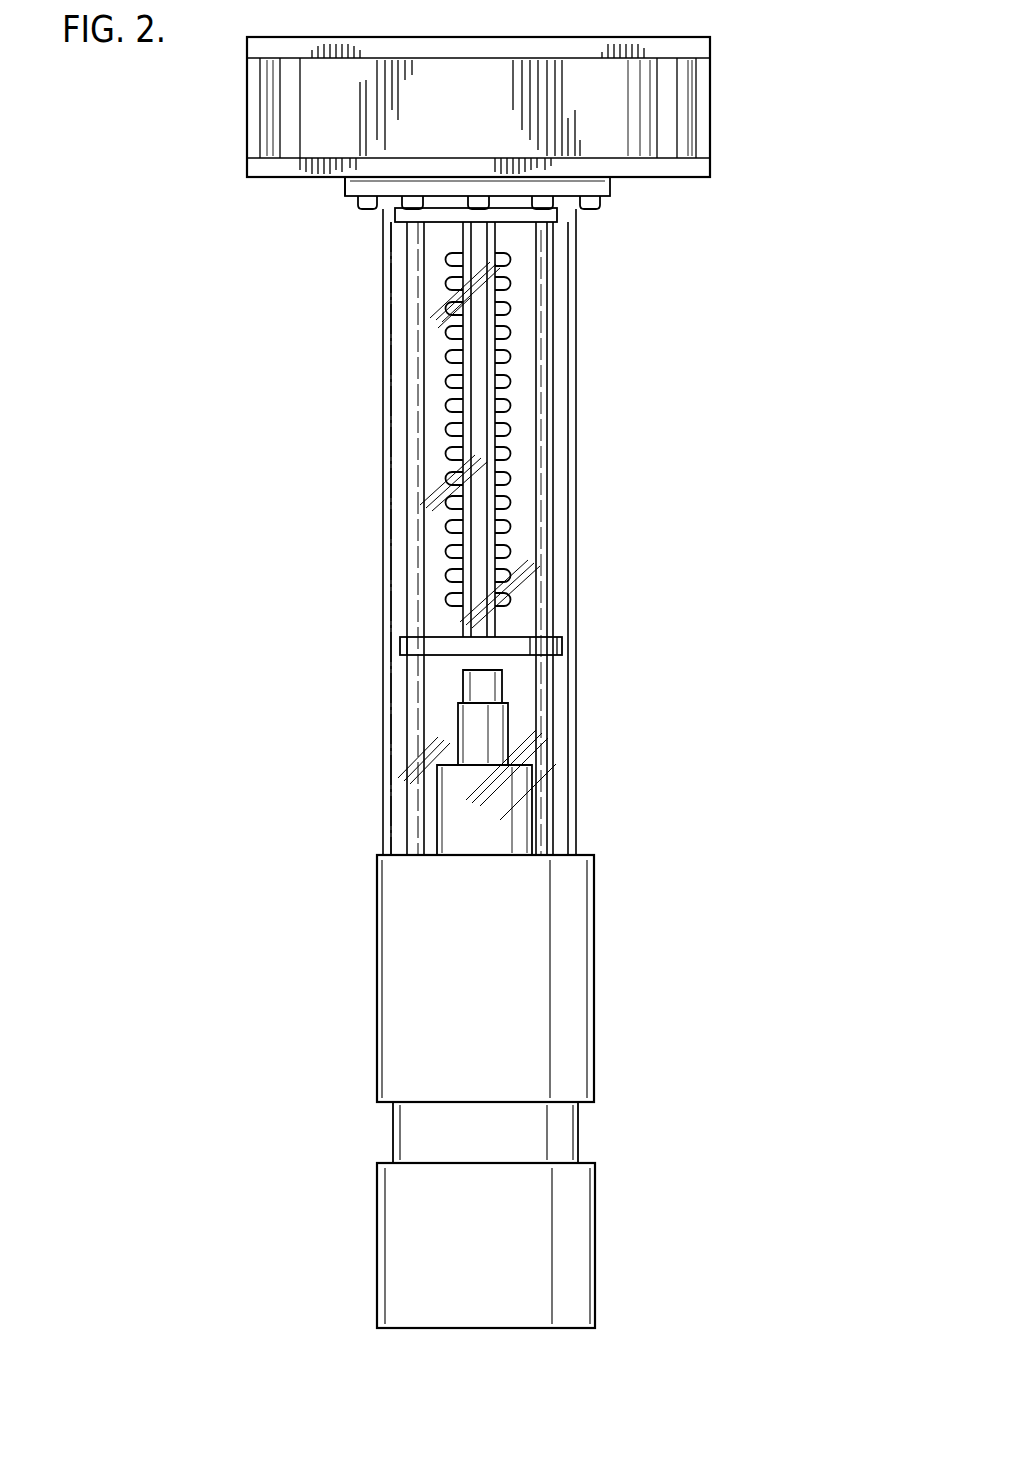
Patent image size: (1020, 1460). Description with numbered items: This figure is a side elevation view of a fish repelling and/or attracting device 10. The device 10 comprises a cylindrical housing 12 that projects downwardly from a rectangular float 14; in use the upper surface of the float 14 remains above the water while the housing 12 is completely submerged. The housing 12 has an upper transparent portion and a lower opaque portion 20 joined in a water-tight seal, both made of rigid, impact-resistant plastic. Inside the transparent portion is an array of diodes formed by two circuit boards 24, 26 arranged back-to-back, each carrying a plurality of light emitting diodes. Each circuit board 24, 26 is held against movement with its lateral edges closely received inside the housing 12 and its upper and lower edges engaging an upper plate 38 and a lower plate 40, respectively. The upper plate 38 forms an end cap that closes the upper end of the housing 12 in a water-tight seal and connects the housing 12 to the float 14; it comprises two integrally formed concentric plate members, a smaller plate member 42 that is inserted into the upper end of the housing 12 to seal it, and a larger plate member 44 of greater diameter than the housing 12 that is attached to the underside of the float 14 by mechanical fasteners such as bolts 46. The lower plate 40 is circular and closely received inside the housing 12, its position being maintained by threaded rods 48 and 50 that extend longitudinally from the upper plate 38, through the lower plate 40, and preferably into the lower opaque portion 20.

The fish repelling and/or attracting device 10 is at (743, 52).
The rectangular float 14 is at (725, 165).
The larger plate member 44 is at (612, 180).
The upper plate 38 is at (344, 180).
The bolts 46 is at (360, 210).
The smaller plate member 42 is at (523, 222).
The cylindrical housing 12 is at (576, 415).
The threaded rod 50 is at (408, 462).
The threaded rod 48 is at (552, 490).
The circuit board 26 is at (458, 343).
The circuit board 24 is at (505, 345).
The lower plate 40 is at (400, 647).
The lower opaque portion 20 is at (595, 958).